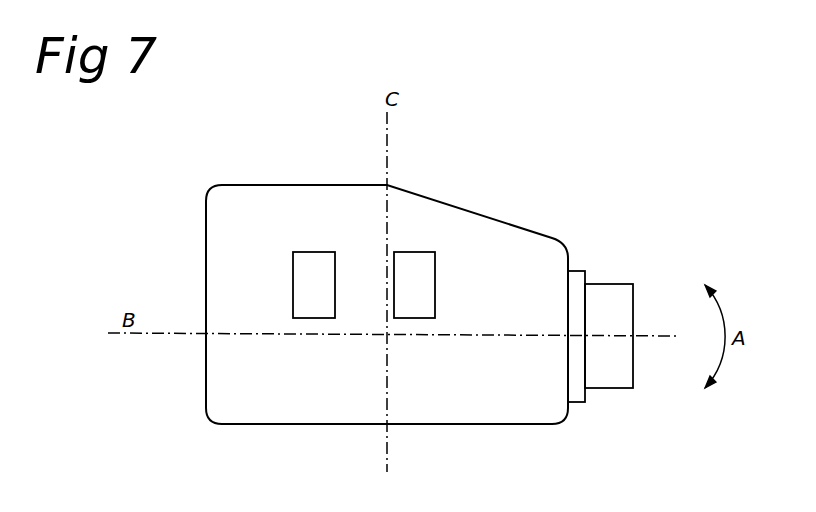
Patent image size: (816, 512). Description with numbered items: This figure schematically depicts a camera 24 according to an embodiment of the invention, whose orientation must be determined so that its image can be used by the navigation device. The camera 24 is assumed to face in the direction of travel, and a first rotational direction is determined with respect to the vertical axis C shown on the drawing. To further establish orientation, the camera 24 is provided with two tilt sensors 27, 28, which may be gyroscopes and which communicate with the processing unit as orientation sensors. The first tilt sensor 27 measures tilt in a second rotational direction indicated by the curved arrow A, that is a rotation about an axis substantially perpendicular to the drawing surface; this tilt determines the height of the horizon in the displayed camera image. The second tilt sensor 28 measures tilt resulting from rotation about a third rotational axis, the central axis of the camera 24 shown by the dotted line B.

The camera 24 is at (530, 215).
The first tilt sensor 27 is at (307, 282).
The second tilt sensor 28 is at (415, 273).